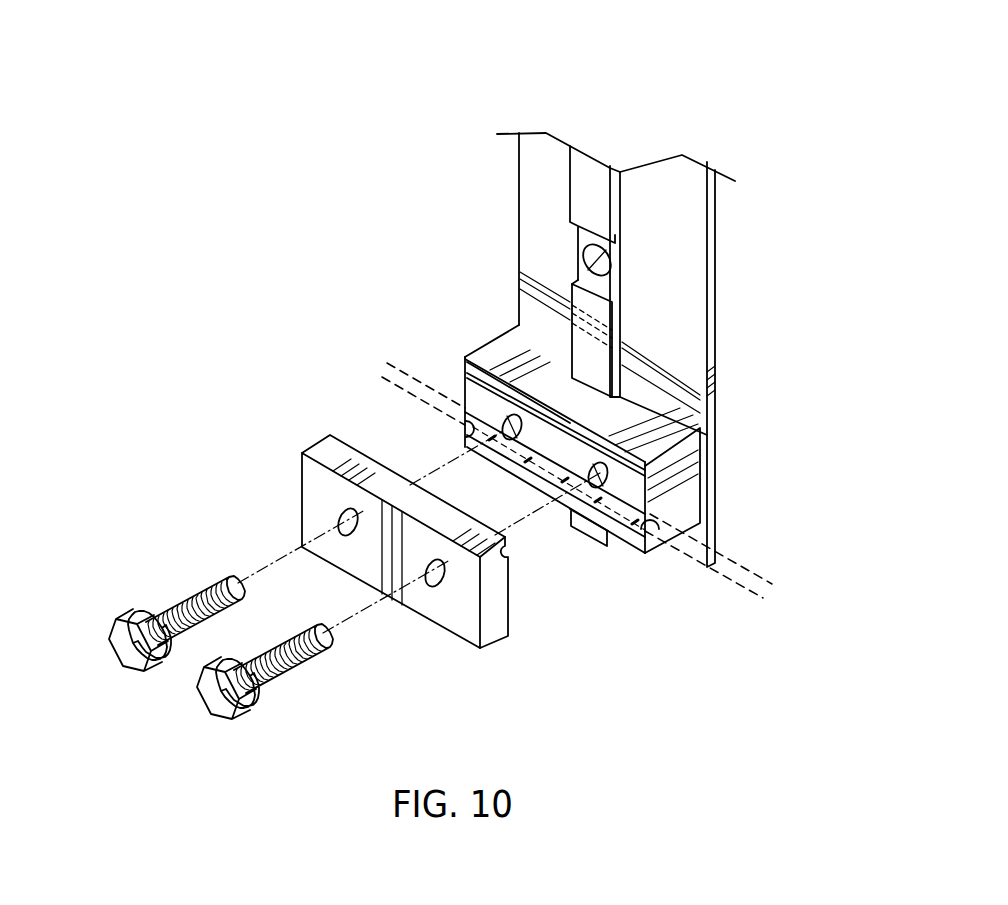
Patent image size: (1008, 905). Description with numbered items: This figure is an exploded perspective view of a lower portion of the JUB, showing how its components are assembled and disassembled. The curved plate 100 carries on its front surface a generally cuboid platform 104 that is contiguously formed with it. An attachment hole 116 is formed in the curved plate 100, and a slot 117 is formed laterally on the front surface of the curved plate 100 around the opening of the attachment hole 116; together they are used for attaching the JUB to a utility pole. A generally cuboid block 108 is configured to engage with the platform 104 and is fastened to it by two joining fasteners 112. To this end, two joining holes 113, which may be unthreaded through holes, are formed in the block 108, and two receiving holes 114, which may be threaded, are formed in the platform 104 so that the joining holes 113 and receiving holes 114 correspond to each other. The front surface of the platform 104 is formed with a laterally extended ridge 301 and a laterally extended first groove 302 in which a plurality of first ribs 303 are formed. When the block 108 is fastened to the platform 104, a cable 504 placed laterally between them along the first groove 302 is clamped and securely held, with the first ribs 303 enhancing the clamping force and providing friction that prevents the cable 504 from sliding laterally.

The curved plate 100 is at (532, 165).
The platform 104 is at (683, 453).
The block 108 is at (453, 627).
The joining fastener 112 is at (197, 590).
The joining hole 113 is at (338, 520).
The receiving hole 114 is at (470, 392).
The attachment hole 116 is at (593, 253).
The slot 117 is at (607, 287).
The ridge 301 is at (463, 370).
The first groove 302 is at (617, 517).
The first rib 303 is at (600, 503).
The cable 504 is at (728, 557).